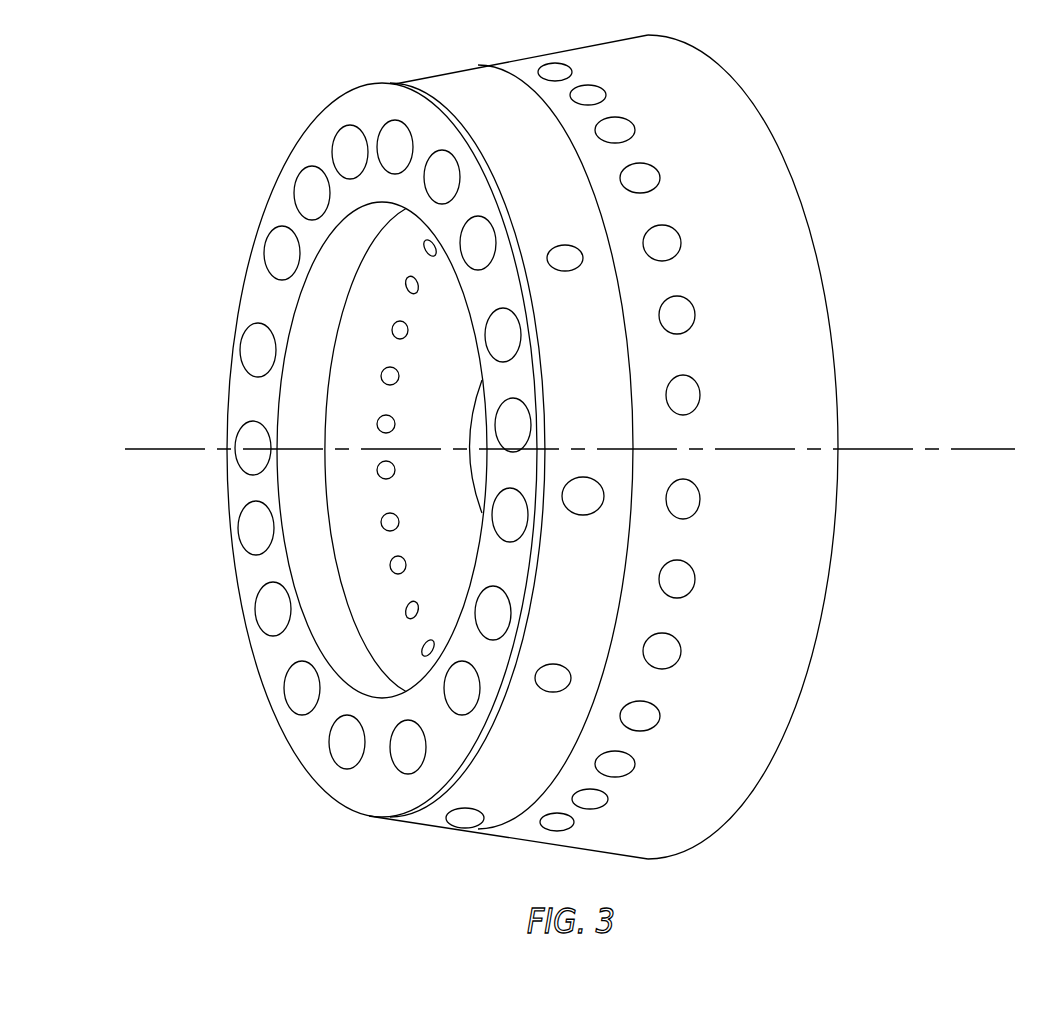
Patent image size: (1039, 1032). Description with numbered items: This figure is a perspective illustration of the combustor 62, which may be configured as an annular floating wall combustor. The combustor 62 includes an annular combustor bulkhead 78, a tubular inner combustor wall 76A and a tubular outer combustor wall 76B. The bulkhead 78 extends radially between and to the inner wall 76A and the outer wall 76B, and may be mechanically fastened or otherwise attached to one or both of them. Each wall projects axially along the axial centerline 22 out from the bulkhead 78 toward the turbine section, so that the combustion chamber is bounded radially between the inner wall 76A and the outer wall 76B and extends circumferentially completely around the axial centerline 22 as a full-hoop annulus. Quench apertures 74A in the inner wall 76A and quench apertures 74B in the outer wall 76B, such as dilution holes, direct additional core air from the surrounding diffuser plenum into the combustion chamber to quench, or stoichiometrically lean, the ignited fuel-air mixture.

The combustor 62 is at (570, 436).
The quench aperture 74A is at (433, 640).
The quench aperture 74B is at (700, 502).
The inner combustor wall 76A is at (327, 577).
The outer combustor wall 76B is at (787, 323).
The combustor bulkhead 78 is at (352, 783).
The axial centerline 22 is at (979, 448).